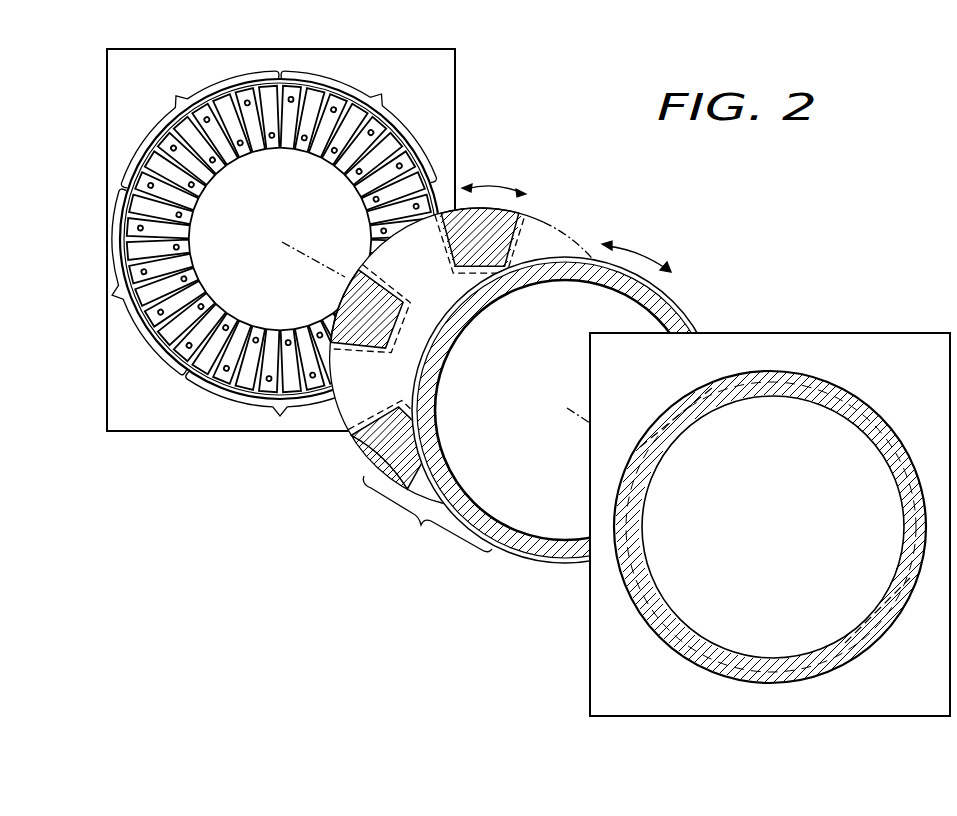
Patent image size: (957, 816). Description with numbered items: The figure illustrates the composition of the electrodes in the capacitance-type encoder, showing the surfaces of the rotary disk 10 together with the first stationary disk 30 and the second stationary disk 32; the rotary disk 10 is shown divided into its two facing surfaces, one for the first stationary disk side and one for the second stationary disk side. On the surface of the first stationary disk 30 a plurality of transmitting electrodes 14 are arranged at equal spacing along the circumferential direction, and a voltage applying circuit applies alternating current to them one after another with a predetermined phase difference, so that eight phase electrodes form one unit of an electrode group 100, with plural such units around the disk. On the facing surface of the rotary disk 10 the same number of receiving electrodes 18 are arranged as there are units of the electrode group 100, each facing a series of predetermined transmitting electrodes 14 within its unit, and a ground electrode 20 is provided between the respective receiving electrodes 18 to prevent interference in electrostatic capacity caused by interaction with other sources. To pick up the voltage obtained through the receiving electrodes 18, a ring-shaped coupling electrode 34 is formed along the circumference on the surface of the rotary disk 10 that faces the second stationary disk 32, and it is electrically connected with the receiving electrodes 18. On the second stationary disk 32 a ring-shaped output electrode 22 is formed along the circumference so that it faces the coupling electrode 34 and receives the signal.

The rotary disk 10 is at (430, 558).
The transmitting electrodes 14 is at (186, 234).
The receiving electrodes 18 is at (521, 212).
The ground electrode 20 is at (382, 262).
The output electrode 22 is at (852, 408).
The first stationary disk 30 is at (167, 431).
The second stationary disk 32 is at (590, 633).
The coupling electrode 34 is at (674, 302).
The electrode group 100 is at (176, 96).